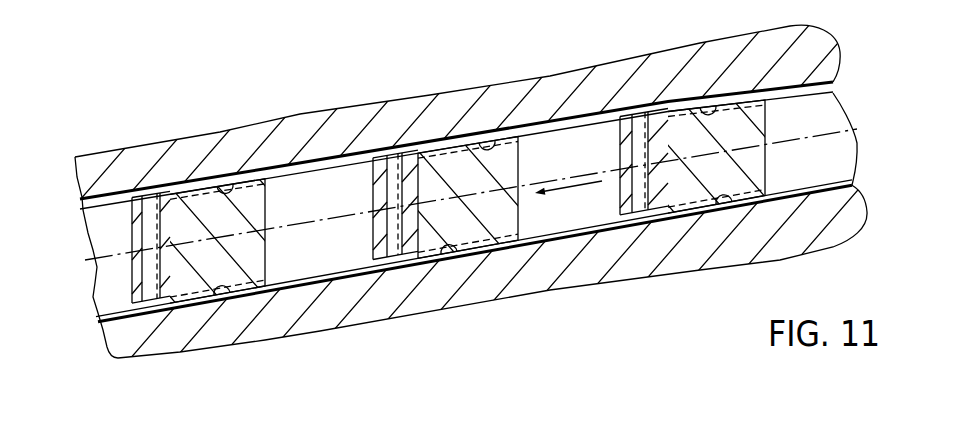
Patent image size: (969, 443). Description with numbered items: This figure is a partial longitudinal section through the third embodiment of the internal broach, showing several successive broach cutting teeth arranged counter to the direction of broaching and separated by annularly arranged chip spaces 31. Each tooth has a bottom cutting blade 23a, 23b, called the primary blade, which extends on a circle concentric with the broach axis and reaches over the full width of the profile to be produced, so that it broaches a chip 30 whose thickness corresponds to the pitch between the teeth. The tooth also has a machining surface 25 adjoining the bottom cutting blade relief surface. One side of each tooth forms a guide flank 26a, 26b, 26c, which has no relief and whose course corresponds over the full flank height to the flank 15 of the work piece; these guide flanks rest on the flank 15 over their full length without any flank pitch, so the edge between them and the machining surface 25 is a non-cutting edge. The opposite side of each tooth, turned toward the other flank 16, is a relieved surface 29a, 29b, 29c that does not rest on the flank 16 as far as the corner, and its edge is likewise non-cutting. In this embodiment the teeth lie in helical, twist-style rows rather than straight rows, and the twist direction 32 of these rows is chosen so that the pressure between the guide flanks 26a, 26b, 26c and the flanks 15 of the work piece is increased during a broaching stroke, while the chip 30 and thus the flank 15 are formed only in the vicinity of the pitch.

The flank 15 is at (502, 250).
The flank 16 is at (305, 163).
The bottom cutting blade 23a is at (190, 192).
The bottom cutting blade 23b is at (433, 152).
The machining surface 25 is at (165, 300).
The guide flank 26a is at (224, 297).
The guide flank 26b is at (450, 259).
The guide flank 26c is at (726, 209).
The relieved surface 29a is at (234, 180).
The relieved surface 29b is at (492, 137).
The relieved surface 29c is at (717, 104).
The chip 30 is at (137, 303).
The chip space 31 is at (828, 128).
The twist direction 32 is at (577, 186).